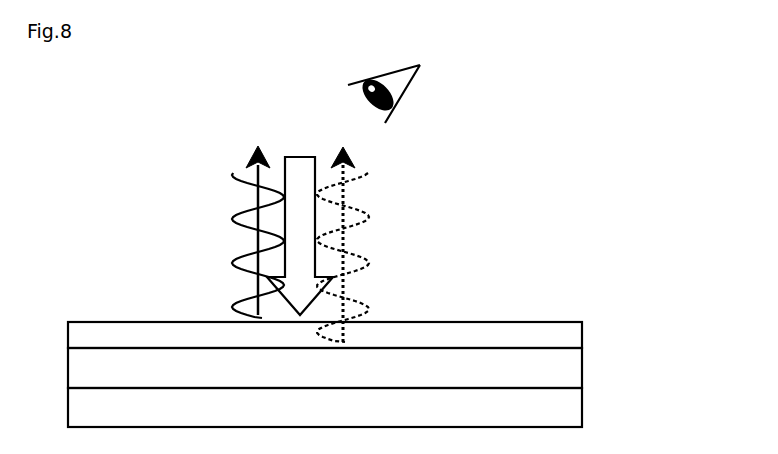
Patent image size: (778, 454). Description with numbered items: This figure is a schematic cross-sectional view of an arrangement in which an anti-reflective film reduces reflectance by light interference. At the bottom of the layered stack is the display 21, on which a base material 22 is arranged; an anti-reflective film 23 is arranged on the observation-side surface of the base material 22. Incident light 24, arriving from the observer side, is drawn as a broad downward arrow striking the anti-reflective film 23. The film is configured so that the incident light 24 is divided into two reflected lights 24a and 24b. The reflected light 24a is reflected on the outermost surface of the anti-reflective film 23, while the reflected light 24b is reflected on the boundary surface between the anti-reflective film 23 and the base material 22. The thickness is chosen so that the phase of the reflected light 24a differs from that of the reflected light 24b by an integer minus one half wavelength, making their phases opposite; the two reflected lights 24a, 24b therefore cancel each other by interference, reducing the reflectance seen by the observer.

The display 21 is at (572, 404).
The base material 22 is at (572, 370).
The anti-reflective film 23 is at (572, 338).
The incident light 24 is at (298, 158).
The reflected light 24a is at (251, 192).
The reflected light 24b is at (345, 190).